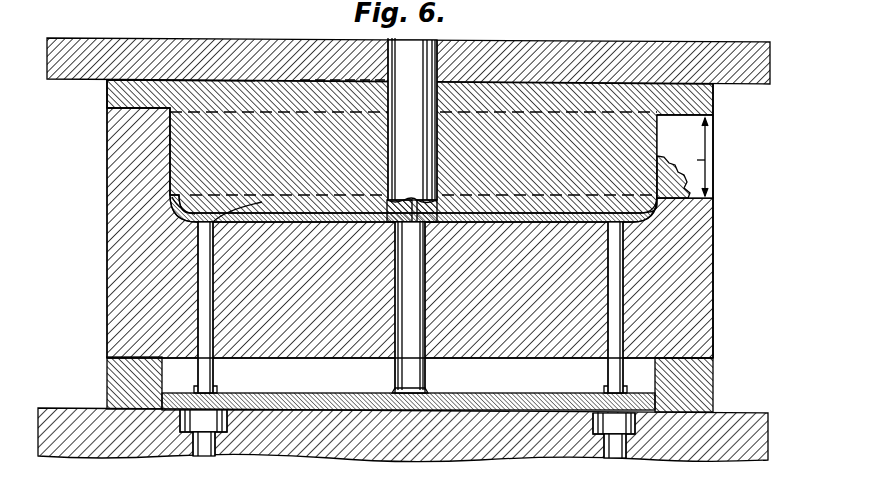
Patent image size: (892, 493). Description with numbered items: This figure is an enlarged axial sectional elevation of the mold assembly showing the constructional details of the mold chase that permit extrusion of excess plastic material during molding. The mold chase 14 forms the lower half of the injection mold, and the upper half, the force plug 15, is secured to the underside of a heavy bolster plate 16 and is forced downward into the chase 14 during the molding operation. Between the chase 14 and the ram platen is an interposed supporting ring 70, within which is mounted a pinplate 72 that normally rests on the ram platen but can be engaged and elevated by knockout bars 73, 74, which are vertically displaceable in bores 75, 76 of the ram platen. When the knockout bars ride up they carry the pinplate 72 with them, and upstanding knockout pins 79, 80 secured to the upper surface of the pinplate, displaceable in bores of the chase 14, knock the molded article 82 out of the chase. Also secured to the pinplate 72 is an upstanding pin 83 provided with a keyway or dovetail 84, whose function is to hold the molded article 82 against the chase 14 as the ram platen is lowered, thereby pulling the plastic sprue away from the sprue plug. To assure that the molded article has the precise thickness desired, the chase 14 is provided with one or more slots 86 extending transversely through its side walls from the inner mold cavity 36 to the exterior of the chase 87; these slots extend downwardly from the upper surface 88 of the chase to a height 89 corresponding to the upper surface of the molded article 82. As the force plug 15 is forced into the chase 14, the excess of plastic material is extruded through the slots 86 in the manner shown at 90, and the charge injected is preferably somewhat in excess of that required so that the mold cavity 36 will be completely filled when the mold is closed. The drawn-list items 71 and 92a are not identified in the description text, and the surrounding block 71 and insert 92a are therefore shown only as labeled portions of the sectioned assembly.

The mold chase 14 is at (713, 240).
The force plug 15 is at (530, 100).
The bolster plate 16 is at (302, 54).
The mold cavity 36 is at (393, 185).
The supporting ring 70 is at (713, 368).
The left spacer block 71 is at (112, 373).
The pinplate 72 is at (330, 394).
The knockout bar 73 is at (210, 456).
The knockout bar 74 is at (613, 464).
The bore 75 is at (195, 452).
The bore 76 is at (600, 465).
The knockout pin 79 is at (200, 298).
The knockout pin 80 is at (625, 297).
The molded article 82 is at (213, 250).
The upstanding pin 83 is at (420, 386).
The keyway or dovetail 84 is at (385, 210).
The slot 86 is at (697, 160).
The exterior of the chase 87 is at (713, 138).
The upper surface of the chase 88 is at (124, 109).
The height 89 is at (705, 205).
The excess plastic material 90 is at (688, 182).
The left block 92a is at (196, 186).